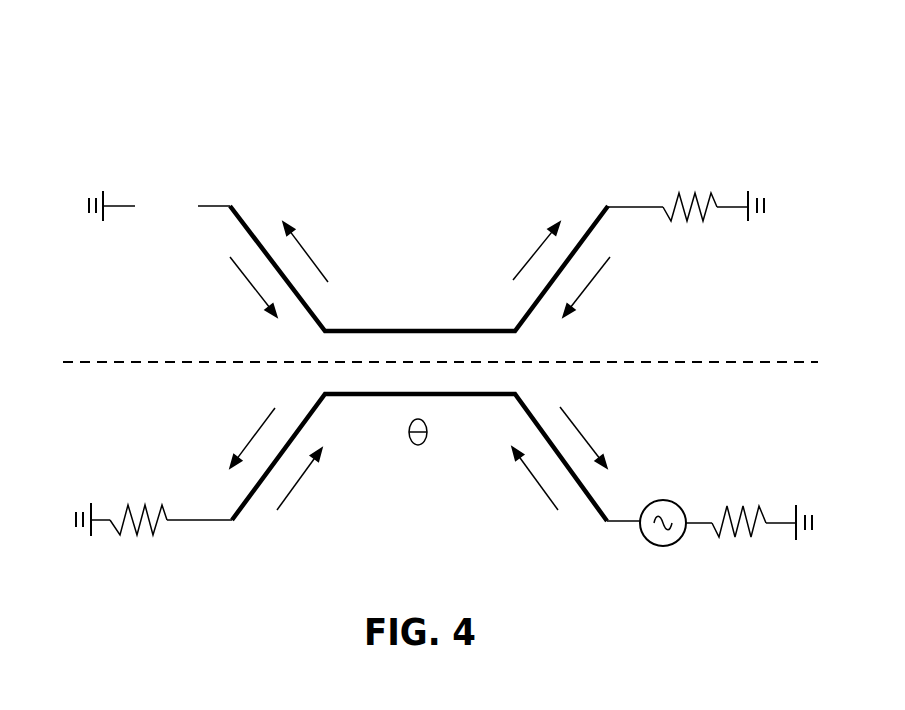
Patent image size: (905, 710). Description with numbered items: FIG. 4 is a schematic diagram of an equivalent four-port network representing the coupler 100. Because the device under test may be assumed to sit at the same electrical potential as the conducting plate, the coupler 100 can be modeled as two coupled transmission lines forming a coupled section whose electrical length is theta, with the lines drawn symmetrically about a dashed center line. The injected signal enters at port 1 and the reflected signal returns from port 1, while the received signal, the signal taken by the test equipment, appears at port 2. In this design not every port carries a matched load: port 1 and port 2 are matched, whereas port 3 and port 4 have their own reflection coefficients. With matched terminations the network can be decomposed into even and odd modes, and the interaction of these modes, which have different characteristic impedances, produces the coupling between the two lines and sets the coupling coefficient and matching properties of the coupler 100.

The coupler 100 is at (114, 94).
The port 1 is at (709, 528).
The port 2 is at (686, 196).
The port 3 is at (159, 173).
The port 4 is at (154, 527).